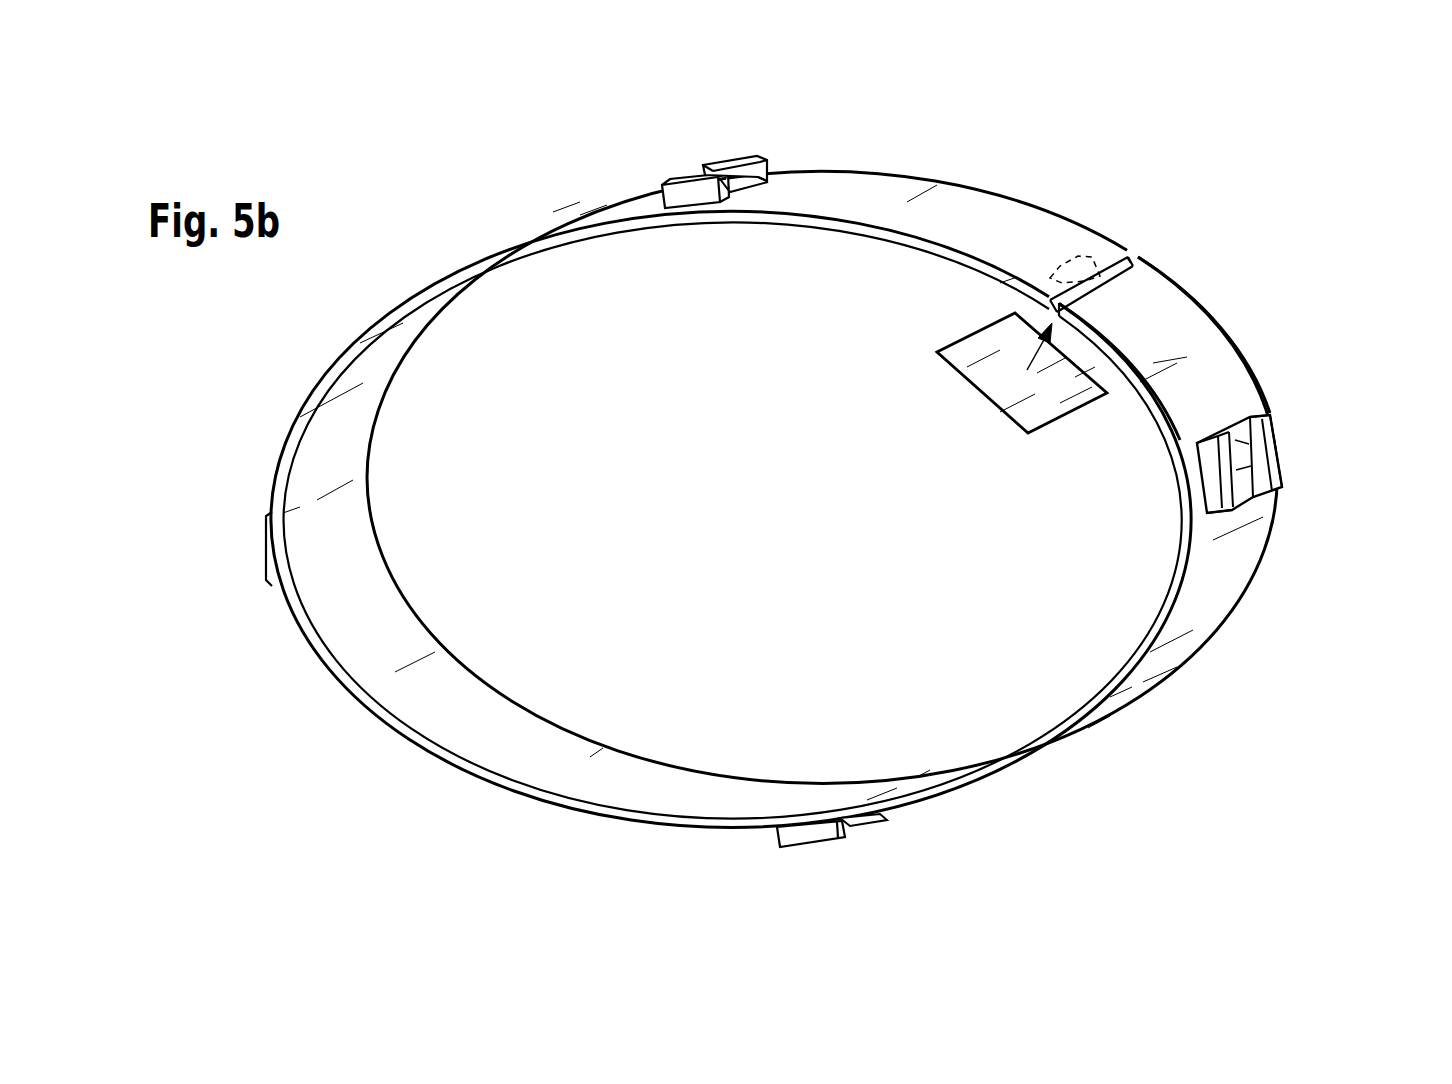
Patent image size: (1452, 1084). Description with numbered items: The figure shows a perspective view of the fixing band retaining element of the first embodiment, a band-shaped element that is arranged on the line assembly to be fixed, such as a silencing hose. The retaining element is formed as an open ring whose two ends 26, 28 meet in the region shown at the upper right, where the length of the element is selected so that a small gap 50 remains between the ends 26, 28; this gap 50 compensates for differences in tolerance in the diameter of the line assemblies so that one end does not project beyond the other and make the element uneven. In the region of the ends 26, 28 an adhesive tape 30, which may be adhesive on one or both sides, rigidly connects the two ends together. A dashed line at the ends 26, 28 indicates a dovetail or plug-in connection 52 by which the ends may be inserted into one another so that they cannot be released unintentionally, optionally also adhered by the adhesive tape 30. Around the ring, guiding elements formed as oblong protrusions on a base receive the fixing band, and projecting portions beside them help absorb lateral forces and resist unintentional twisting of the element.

The end 26 is at (1037, 243).
The end 28 is at (1133, 303).
The adhesive tape 30 is at (1000, 367).
The gap 50 is at (1120, 253).
The plug-in connection 52 is at (1077, 258).